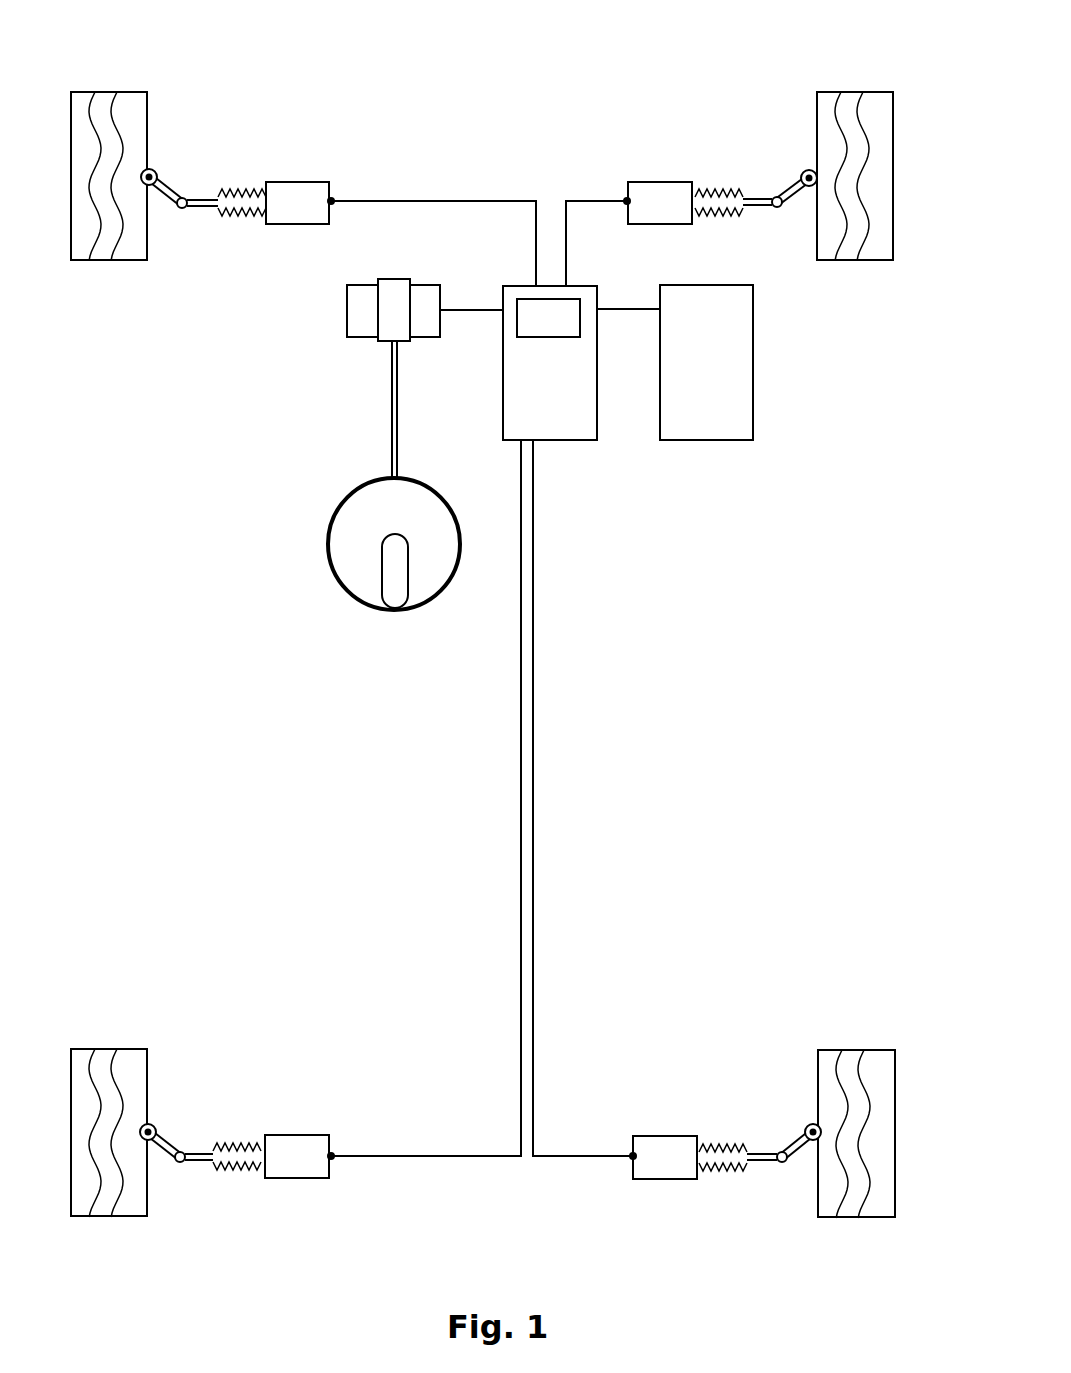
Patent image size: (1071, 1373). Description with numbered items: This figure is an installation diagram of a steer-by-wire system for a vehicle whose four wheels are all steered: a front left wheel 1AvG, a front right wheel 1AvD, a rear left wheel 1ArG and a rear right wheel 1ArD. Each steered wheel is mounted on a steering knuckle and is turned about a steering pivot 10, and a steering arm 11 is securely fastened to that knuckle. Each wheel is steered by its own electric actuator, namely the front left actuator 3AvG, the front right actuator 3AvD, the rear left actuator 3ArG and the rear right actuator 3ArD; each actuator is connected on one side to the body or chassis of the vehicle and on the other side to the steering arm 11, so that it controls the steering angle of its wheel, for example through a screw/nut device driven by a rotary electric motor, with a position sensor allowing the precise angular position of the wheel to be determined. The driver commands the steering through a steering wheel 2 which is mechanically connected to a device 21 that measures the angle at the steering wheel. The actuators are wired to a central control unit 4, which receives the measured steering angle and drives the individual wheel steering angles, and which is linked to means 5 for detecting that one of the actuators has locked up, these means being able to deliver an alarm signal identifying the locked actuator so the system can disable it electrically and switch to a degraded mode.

The front left steered wheel 1AvG is at (118, 140).
The front right steered wheel 1AvD is at (864, 141).
The rear left steered wheel 1ArG is at (124, 1099).
The rear right steered wheel 1ArD is at (873, 1099).
The front left electric actuator 3AvG is at (377, 148).
The front right electric actuator 3AvD is at (691, 148).
The rear left electric actuator 3ArG is at (241, 1094).
The rear right electric actuator 3ArD is at (726, 1093).
The steering pivot 10 is at (188, 142).
The steering arm 11 is at (138, 272).
The steering wheel 2 is at (341, 482).
The device for measuring the angle at the steering wheel 21 is at (349, 335).
The controller computing wheel steering angles 4 is at (494, 690).
The means for detecting actuator lock-up 5 is at (722, 338).